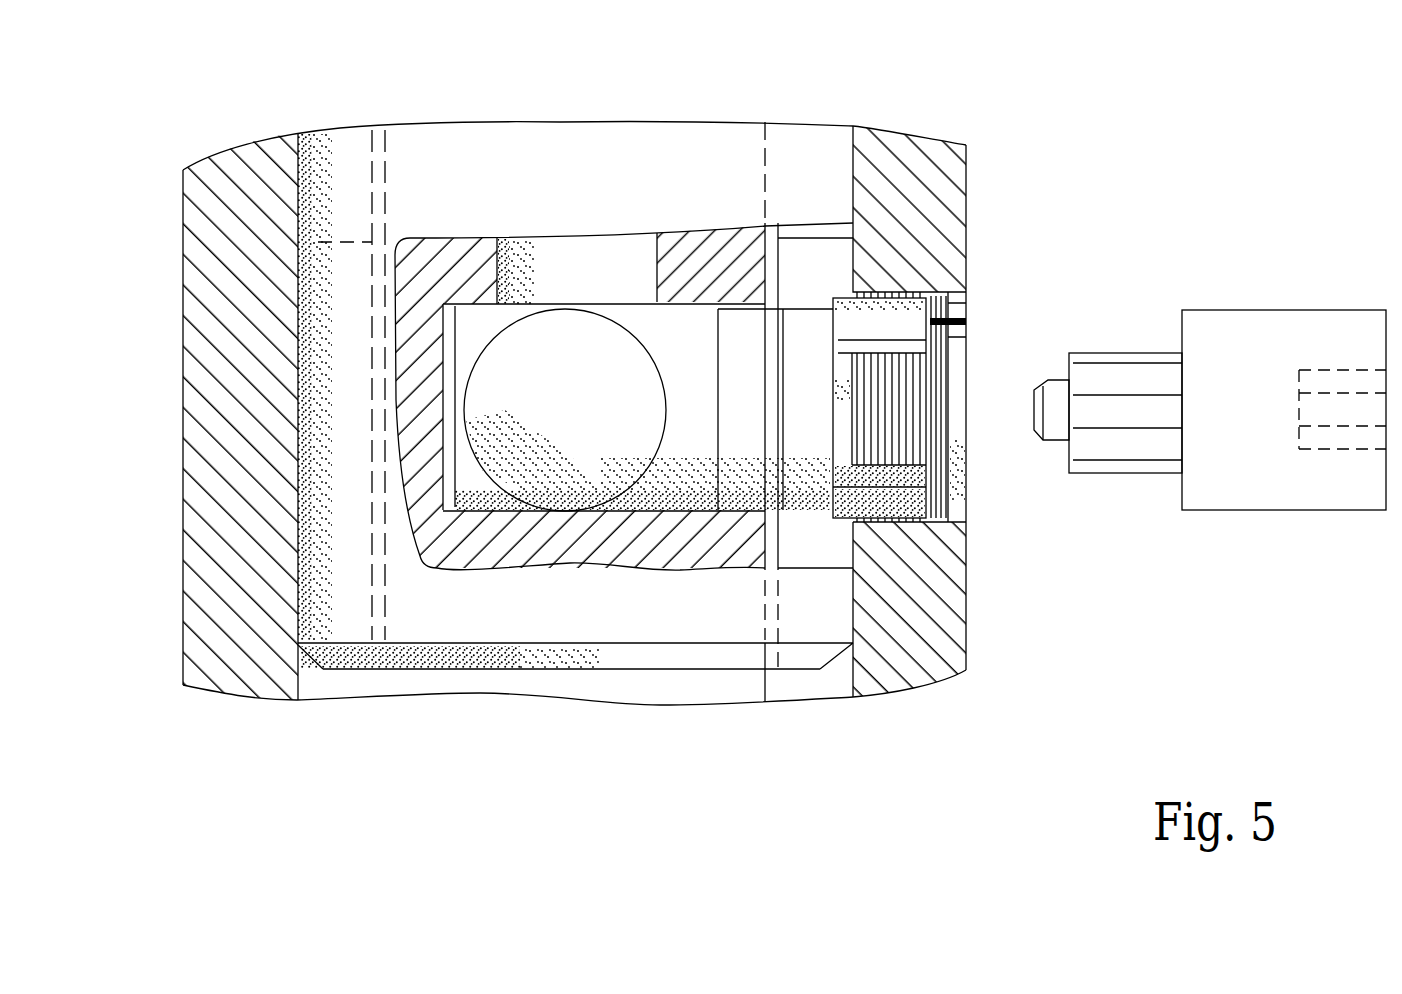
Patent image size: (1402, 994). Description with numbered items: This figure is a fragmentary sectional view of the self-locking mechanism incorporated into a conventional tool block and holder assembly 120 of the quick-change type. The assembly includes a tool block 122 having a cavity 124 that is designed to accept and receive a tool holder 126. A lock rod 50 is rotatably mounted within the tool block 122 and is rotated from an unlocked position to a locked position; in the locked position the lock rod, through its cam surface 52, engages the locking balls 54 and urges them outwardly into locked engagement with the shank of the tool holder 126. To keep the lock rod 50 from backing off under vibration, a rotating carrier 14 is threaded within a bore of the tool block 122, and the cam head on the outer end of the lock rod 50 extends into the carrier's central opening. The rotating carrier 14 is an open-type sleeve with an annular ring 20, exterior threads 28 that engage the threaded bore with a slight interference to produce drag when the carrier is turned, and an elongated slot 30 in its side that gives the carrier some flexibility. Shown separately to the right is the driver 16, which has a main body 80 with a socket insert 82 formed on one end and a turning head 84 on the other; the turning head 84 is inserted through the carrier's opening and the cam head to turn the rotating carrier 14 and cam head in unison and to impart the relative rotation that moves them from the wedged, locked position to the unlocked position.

The rotating carrier 14 is at (980, 338).
The driver 16 is at (1252, 523).
The annular ring 20 is at (966, 482).
The exterior threads 28 is at (927, 407).
The elongated slot 30 is at (965, 312).
The lock rod 50 is at (692, 448).
The cam surface 52 is at (496, 510).
The locking balls 54 is at (525, 355).
The main body 80 is at (1270, 325).
The socket insert 82 is at (1325, 449).
The turning head 84 is at (1142, 329).
The tool block and holder assembly 120 is at (142, 653).
The tool block 122 is at (920, 647).
The cavity 124 is at (625, 538).
The tool holder 126 is at (678, 115).